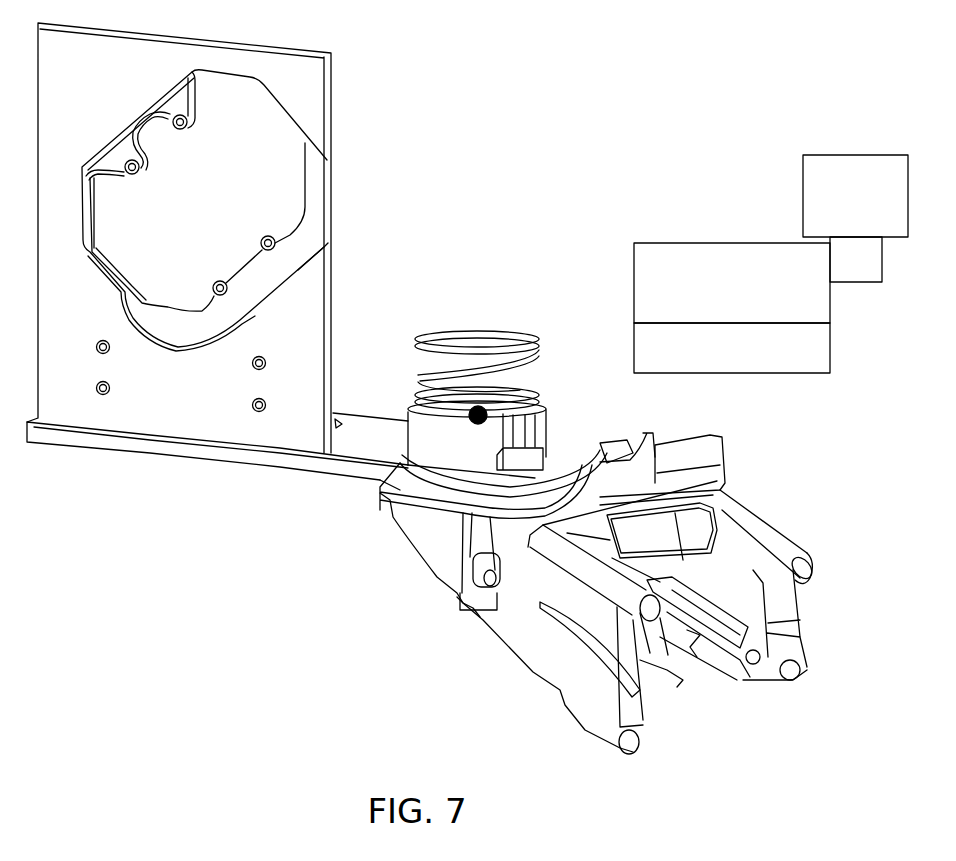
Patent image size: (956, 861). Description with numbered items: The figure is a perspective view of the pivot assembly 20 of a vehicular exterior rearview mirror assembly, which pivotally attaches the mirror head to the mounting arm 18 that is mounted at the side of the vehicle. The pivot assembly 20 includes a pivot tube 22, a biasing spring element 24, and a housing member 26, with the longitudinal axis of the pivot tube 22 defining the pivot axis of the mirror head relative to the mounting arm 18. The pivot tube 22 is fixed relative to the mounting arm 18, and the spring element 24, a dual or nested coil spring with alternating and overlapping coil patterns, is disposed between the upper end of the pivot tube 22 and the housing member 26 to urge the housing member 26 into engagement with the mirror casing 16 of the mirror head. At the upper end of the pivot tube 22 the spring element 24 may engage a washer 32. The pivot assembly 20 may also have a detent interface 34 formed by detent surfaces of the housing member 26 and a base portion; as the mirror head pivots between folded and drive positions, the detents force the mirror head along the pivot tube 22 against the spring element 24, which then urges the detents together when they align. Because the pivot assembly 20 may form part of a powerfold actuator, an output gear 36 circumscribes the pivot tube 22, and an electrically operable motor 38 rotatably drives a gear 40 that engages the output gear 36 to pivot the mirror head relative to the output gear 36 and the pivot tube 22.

The mirror casing 16 is at (175, 450).
The mounting arm 18 is at (775, 553).
The pivot assembly 20 is at (448, 300).
The pivot tube 22 is at (505, 333).
The spring element 24 is at (540, 386).
The housing member 26 is at (413, 443).
The washer 32 is at (416, 342).
The detent interface 34 is at (478, 415).
The output gear 36 is at (718, 275).
The electrically operable motor 38 is at (841, 187).
The gear 40 is at (842, 268).